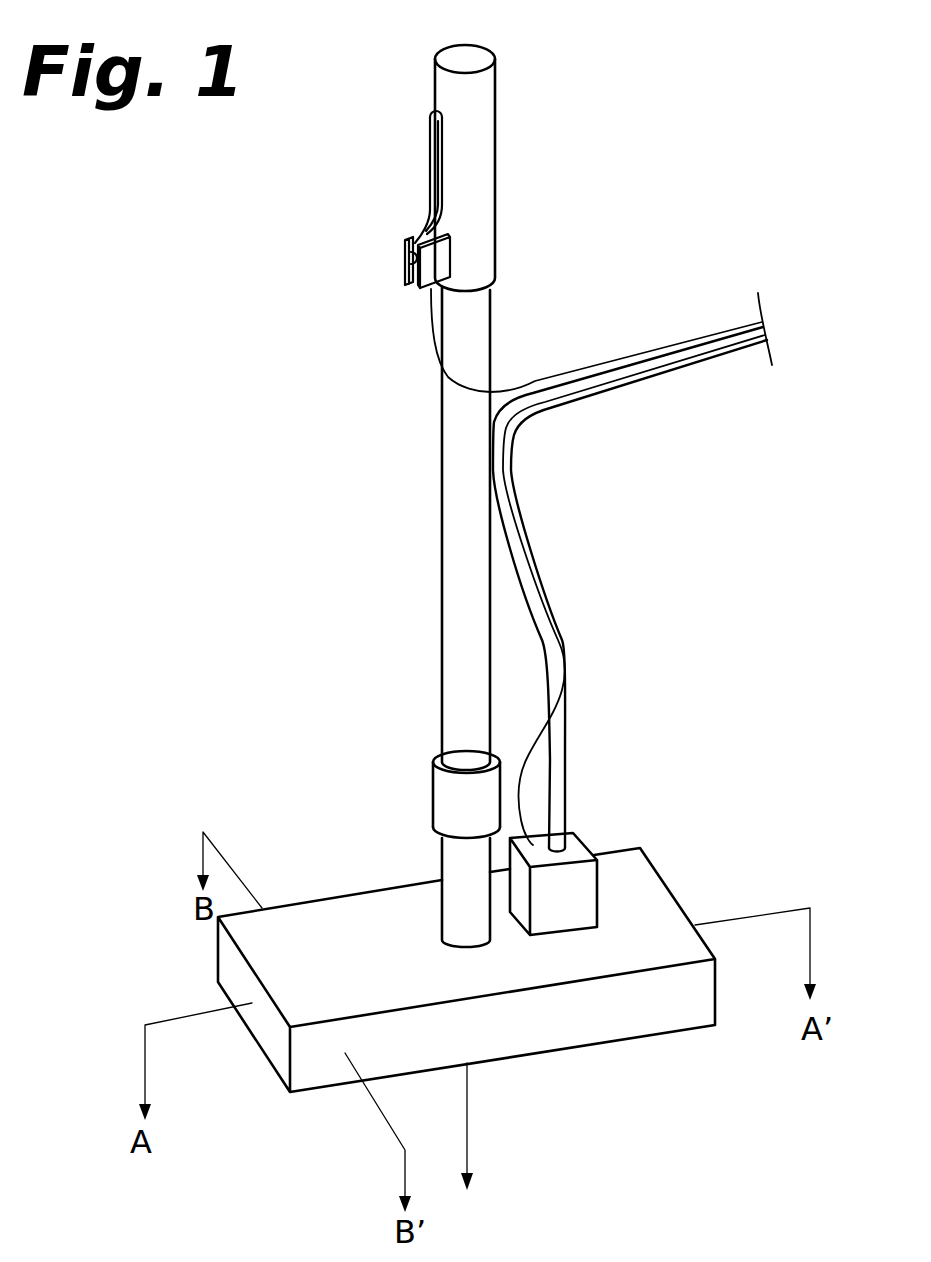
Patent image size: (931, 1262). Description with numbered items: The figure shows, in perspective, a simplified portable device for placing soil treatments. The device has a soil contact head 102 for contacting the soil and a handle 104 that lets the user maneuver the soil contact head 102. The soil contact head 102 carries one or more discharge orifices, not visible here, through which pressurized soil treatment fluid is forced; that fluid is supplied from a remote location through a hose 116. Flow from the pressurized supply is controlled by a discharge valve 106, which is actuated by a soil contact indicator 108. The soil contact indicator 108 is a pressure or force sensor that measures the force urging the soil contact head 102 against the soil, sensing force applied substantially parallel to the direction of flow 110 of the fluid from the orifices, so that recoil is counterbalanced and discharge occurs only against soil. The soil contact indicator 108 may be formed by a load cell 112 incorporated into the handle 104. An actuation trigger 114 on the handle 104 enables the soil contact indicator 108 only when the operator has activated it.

The soil contact head 102 is at (657, 902).
The handle 104 is at (480, 338).
The discharge valve 106 is at (590, 850).
The soil contact indicator 108 is at (443, 820).
The direction of flow 110 is at (467, 1135).
The load cell 112 is at (445, 788).
The actuation trigger 114 is at (437, 165).
The hose 116 is at (558, 770).